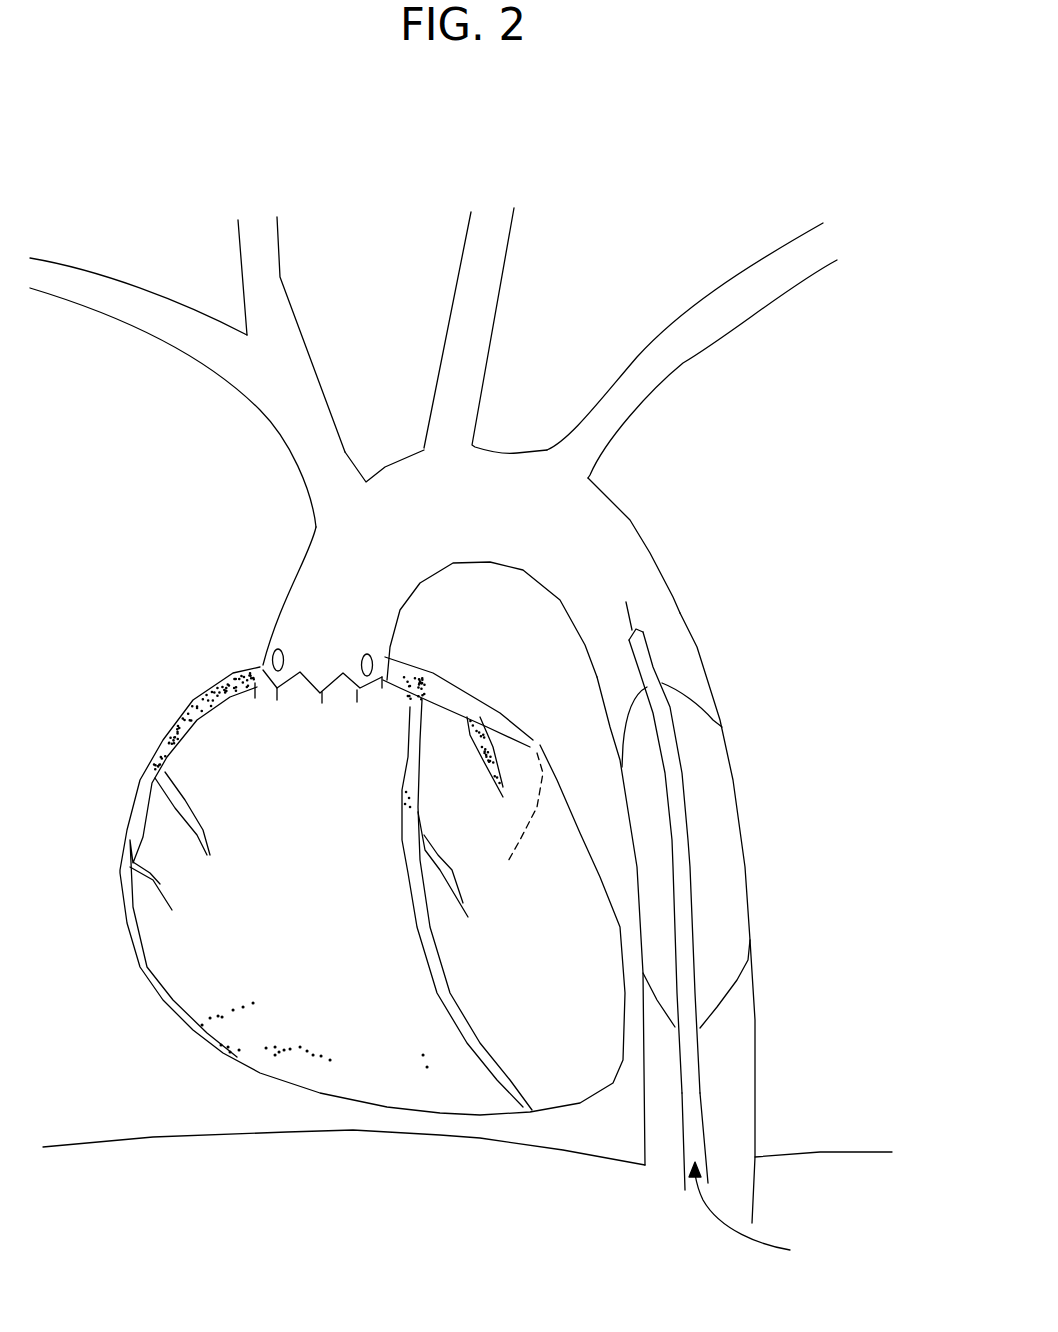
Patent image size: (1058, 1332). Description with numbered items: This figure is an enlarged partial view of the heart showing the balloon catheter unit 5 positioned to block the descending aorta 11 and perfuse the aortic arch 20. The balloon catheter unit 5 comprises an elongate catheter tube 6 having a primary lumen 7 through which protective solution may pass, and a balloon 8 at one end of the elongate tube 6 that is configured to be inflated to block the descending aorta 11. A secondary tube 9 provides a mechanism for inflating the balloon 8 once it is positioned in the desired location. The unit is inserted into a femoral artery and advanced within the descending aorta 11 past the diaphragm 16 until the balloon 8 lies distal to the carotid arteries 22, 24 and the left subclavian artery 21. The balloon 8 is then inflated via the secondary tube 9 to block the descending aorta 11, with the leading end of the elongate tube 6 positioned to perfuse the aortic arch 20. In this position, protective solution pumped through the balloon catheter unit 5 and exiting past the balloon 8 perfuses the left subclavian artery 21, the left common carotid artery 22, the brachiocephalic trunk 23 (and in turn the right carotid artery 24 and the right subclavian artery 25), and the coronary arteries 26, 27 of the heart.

The balloon catheter unit 5 is at (702, 1077).
The elongate catheter tube 6 is at (690, 1058).
The primary lumen 7 is at (758, 1214).
The balloon 8 is at (703, 728).
The secondary tube 9 is at (707, 1145).
The descending aorta 11 is at (757, 1110).
The diaphragm 16 is at (805, 1153).
The aortic arch 20 is at (630, 518).
The left subclavian artery 21 is at (633, 413).
The left common carotid artery 22 is at (493, 362).
The brachiocephalic trunk 23 is at (333, 423).
The right carotid artery 24 is at (287, 295).
The right subclavian artery 25 is at (182, 343).
The coronary artery 26 is at (237, 677).
The coronary artery 27 is at (425, 692).